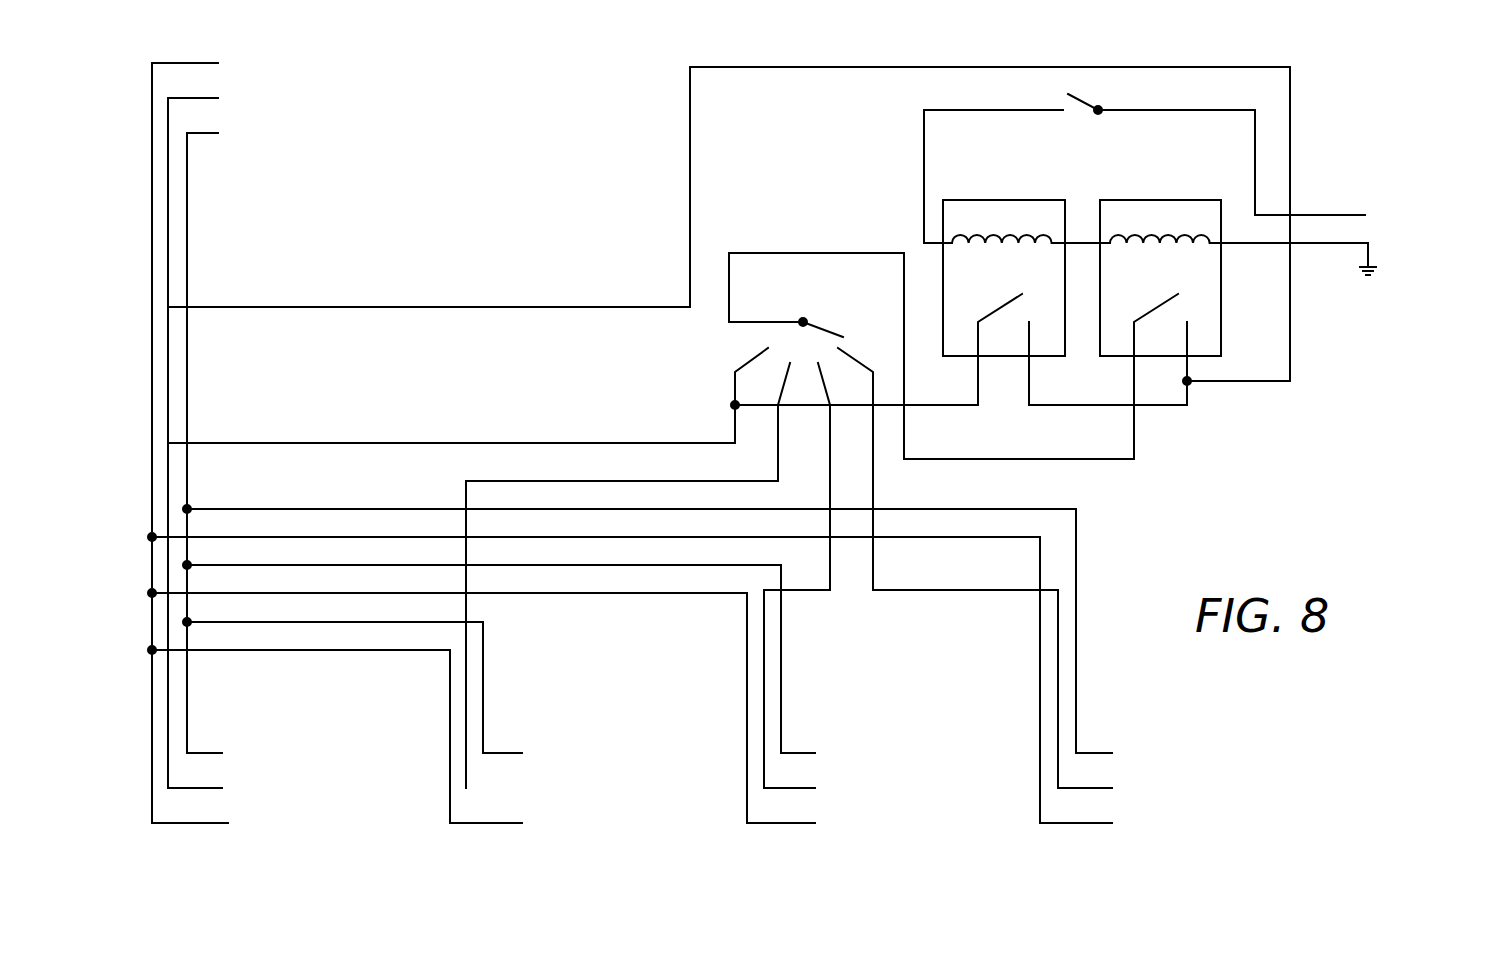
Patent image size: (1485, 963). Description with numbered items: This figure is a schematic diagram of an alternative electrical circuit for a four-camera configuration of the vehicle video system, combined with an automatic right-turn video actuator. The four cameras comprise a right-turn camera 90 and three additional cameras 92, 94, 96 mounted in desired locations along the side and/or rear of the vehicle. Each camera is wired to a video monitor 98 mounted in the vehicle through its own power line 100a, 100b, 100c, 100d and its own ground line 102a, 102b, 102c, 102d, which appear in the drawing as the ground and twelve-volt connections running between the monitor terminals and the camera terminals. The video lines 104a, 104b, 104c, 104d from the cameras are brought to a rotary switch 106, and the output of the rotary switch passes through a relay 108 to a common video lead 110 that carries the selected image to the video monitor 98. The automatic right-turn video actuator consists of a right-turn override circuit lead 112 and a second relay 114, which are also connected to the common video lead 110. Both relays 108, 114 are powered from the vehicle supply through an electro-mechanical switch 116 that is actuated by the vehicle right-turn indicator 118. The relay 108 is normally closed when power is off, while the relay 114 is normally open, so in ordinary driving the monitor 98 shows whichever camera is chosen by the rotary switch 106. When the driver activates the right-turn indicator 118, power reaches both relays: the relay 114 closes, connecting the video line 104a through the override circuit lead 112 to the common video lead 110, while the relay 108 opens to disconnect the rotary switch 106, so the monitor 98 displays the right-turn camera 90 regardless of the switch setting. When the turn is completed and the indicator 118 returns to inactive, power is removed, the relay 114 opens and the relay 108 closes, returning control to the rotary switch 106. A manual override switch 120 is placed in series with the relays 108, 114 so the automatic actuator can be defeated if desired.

The right-turn camera 90 is at (348, 804).
The additional camera 92 is at (645, 804).
The additional camera 94 is at (937, 804).
The additional camera 96 is at (1230, 801).
The video monitor 98 is at (350, 93).
The power line 100a is at (152, 372).
The power line 100b is at (450, 745).
The power line 100c is at (747, 686).
The power line 100d is at (1040, 630).
The ground line 102a is at (187, 478).
The ground line 102b is at (487, 663).
The ground line 102c is at (781, 712).
The ground line 102d is at (1076, 695).
The video line 104a is at (414, 443).
The video line 104b is at (597, 481).
The video line 104c is at (811, 592).
The video line 104d is at (915, 592).
The rotary switch 106 is at (770, 253).
The relay 108 is at (1221, 330).
The common video lead 110 is at (1052, 67).
The right-turn override circuit lead 112 is at (920, 407).
The relay 114 is at (924, 222).
The electro-mechanical switch 116 is at (1393, 110).
The right-turn indicator 118 is at (1425, 182).
The manual override switch 120 is at (1085, 100).